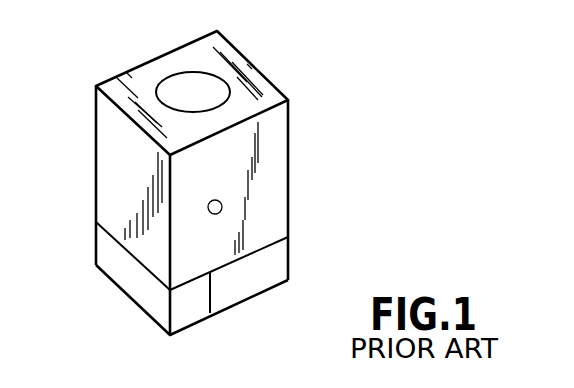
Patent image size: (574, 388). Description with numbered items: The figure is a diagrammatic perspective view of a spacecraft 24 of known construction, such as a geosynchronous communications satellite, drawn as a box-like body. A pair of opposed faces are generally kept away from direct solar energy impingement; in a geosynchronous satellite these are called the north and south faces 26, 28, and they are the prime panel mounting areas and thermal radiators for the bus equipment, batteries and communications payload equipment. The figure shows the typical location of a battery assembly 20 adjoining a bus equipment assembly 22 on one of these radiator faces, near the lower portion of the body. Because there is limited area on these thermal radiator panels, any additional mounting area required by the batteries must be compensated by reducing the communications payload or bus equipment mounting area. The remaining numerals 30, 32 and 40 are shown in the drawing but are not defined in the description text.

The spacecraft 24 is at (335, 83).
The opening in top surface 32 is at (155, 78).
The south face 28 is at (96, 170).
The front side wall 40 is at (273, 135).
The north face 26 is at (262, 194).
The battery assembly 20 is at (270, 272).
The base side portion 30 is at (128, 293).
The bus equipment assembly 22 is at (198, 312).